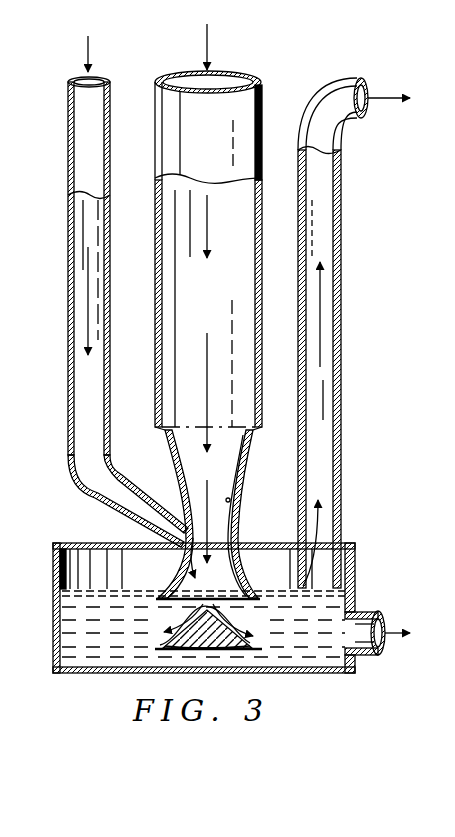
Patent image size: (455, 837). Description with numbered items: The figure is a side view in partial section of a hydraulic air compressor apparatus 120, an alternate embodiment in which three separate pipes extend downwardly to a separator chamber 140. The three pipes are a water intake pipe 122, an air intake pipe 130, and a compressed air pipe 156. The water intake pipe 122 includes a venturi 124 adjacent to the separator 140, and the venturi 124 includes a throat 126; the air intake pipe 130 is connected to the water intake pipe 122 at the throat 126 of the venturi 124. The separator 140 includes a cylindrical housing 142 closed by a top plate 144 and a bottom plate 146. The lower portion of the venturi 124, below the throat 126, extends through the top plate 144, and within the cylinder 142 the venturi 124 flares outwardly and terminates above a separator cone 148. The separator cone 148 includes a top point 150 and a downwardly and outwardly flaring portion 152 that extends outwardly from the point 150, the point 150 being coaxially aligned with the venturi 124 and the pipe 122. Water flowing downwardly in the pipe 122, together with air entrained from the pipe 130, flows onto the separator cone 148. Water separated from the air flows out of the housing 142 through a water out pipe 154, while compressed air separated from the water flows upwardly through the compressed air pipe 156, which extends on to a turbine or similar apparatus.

The hydraulic air compressor apparatus 120 is at (278, 102).
The water intake pipe 122 is at (156, 104).
The venturi 124 is at (241, 463).
The throat 126 is at (230, 502).
The air intake pipe 130 is at (62, 160).
The separator chamber 140 is at (201, 603).
The cylindrical housing 142 is at (55, 606).
The top plate 144 is at (112, 543).
The bottom plate 146 is at (303, 673).
The separator cone 148 is at (162, 647).
The top point 150 is at (228, 613).
The downwardly and outwardly flaring portion 152 is at (250, 648).
The water out pipe 154 is at (372, 612).
The compressed air pipe 156 is at (342, 478).